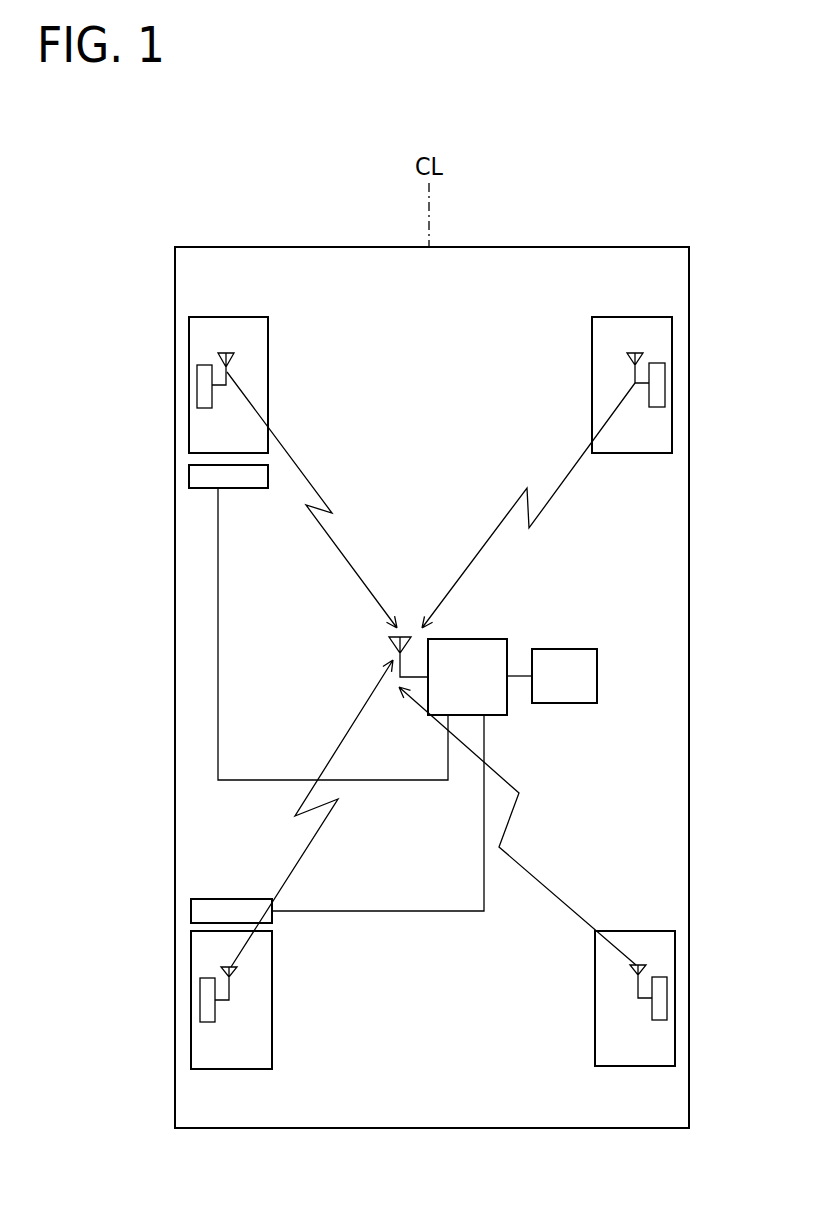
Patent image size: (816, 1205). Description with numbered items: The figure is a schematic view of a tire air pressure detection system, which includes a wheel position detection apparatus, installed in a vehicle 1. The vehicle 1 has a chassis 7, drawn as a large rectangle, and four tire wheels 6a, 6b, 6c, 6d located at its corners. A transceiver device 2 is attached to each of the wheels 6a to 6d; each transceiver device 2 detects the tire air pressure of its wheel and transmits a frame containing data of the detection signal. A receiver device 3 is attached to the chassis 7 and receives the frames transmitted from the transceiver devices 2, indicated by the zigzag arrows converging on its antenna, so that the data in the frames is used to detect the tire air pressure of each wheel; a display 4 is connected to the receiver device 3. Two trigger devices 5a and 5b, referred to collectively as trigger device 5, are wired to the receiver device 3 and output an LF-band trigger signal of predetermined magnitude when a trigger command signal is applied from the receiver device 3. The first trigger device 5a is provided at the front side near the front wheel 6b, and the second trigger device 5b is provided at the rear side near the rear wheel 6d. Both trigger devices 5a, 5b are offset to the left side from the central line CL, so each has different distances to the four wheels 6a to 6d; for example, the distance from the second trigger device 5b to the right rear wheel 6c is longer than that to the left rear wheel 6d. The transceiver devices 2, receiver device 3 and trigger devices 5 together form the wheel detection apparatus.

The vehicle 1 is at (593, 247).
The transceiver device 2 is at (197, 365).
The receiver device 3 is at (472, 639).
The display 4 is at (577, 704).
The trigger device 5 is at (280, 694).
The first trigger device 5a is at (189, 477).
The second trigger device 5b is at (299, 819).
The tire wheel 6a is at (626, 317).
The front wheel 6b is at (233, 317).
The right rear wheel 6c is at (652, 1067).
The left rear wheel 6d is at (222, 1070).
The chassis 7 is at (689, 617).